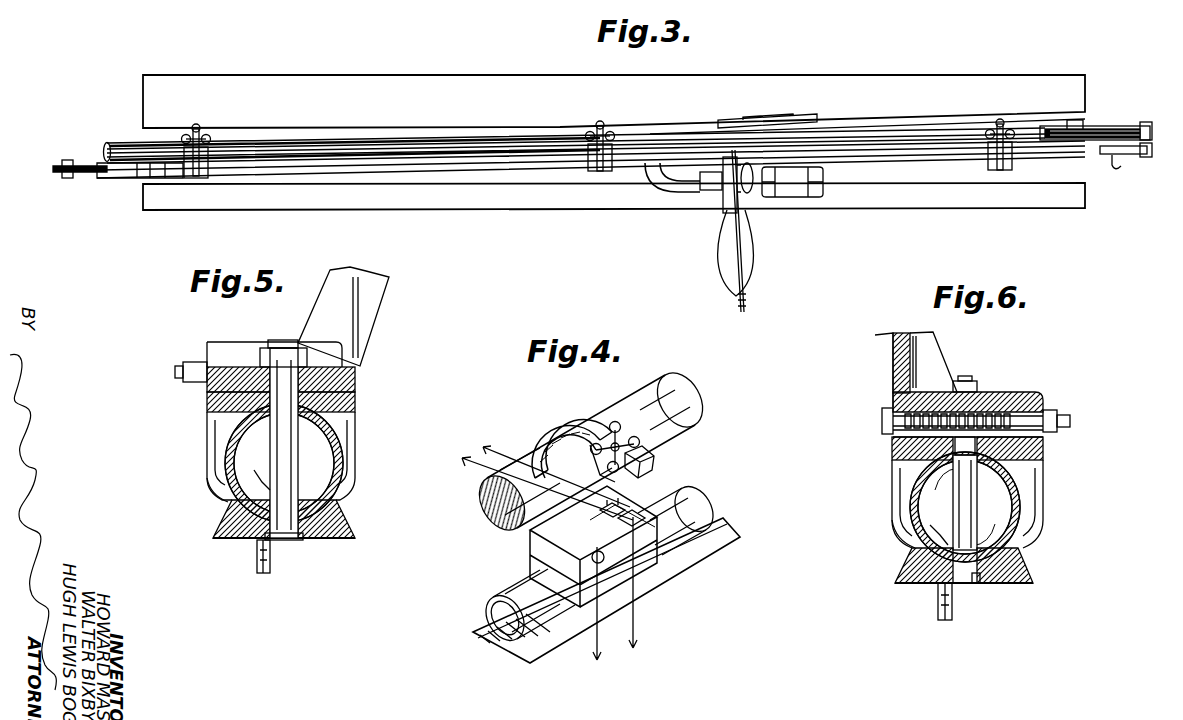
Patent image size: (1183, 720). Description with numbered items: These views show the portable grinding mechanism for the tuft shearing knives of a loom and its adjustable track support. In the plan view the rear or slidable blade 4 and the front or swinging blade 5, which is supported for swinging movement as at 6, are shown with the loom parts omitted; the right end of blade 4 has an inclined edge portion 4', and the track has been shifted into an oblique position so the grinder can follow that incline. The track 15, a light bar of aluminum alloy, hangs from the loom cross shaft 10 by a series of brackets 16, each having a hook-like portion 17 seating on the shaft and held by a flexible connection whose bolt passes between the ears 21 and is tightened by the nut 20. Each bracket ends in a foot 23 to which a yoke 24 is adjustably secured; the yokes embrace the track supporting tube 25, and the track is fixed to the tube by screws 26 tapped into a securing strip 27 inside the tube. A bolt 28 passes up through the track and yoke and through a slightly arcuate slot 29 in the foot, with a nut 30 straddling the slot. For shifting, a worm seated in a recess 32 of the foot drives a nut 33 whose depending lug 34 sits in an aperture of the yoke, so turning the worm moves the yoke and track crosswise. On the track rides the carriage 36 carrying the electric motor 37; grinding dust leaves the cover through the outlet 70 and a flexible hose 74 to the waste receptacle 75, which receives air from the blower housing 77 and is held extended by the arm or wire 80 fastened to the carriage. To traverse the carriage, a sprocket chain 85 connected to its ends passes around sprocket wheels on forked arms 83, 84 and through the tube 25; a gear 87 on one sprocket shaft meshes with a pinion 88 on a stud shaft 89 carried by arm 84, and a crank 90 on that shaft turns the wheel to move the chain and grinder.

In FIG. 3, the slidable or rear blade 4 is at (614, 91).
In FIG. 3, the inclined portion of blade 4' is at (867, 113).
In FIG. 3, the swinging or front blade 5 is at (487, 208).
In FIG. 4, the swinging or front blade 5 is at (559, 545).
In FIG. 4, the swinging support 6 is at (537, 562).
In FIG. 4, the cross shaft 10 is at (652, 392).
In FIG. 3, the track 15 is at (110, 181).
In FIG. 5, the track 15 is at (344, 521).
In FIG. 6, the track 15 is at (1021, 561).
In FIG. 4, the track 15 is at (560, 641).
In FIG. 5, the bracket 16 is at (386, 291).
In FIG. 6, the bracket 16 is at (922, 344).
In FIG. 4, the bracket 16 is at (541, 433).
In FIG. 4, the hook-like portion 17 is at (576, 420).
In FIG. 4, the nut 20 is at (618, 418).
In FIG. 4, the ears 21 is at (649, 469).
In FIG. 5, the foot 23 is at (356, 382).
In FIG. 6, the foot 23 is at (1043, 394).
In FIG. 4, the foot 23 is at (530, 545).
In FIG. 5, the yoke 24 is at (356, 402).
In FIG. 6, the yoke 24 is at (1036, 450).
In FIG. 4, the yoke 24 is at (530, 564).
In FIG. 5, the track supporting tube 25 is at (232, 497).
In FIG. 6, the track supporting tube 25 is at (917, 538).
In FIG. 4, the track supporting tube 25 is at (709, 503).
In FIG. 6, the screws 26 is at (981, 585).
In FIG. 6, the securing strip 27 is at (972, 540).
In FIG. 4, the securing strip 27 is at (500, 641).
In FIG. 5, the bolt 28 is at (292, 473).
In FIG. 6, the bolt 28 is at (976, 491).
In FIG. 5, the arcuate slot 29 is at (255, 375).
In FIG. 4, the arcuate slot 29 is at (636, 511).
In FIG. 5, the nut 30 is at (278, 342).
In FIG. 6, the nut 30 is at (985, 395).
In FIG. 4, the nut 30 is at (612, 503).
In FIG. 6, the recess 32 is at (885, 410).
In FIG. 6, the nut 33 is at (946, 410).
In FIG. 6, the depending lug 34 is at (952, 504).
In FIG. 3, the carriage 36 is at (801, 125).
In FIG. 3, the electric motor 37 is at (816, 198).
In FIG. 3, the dust outlet 70 is at (707, 192).
In FIG. 3, the flexible hose 74 is at (663, 185).
In FIG. 3, the waste receptacle 75 is at (751, 262).
In FIG. 3, the blower housing 77 is at (746, 196).
In FIG. 3, the arm or wire 80 is at (736, 264).
In FIG. 3, the forked arm 83 is at (83, 179).
In FIG. 3, the forked arm 84 is at (1097, 127).
In FIG. 3, the sprocket chain 85 is at (140, 184).
In FIG. 5, the sprocket chain 85 is at (261, 493).
In FIG. 6, the sprocket chain 85 is at (940, 546).
In FIG. 3, the gear 87 is at (1128, 127).
In FIG. 3, the pinion 88 is at (1146, 128).
In FIG. 3, the stud shaft 89 is at (1152, 146).
In FIG. 3, the crank 90 is at (1119, 168).